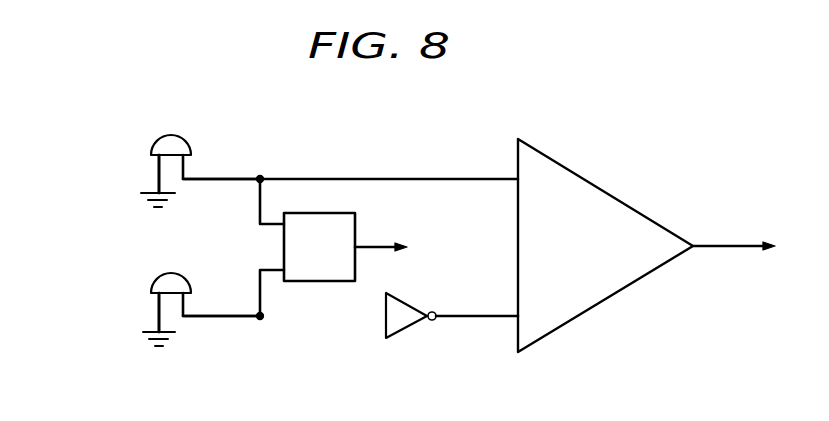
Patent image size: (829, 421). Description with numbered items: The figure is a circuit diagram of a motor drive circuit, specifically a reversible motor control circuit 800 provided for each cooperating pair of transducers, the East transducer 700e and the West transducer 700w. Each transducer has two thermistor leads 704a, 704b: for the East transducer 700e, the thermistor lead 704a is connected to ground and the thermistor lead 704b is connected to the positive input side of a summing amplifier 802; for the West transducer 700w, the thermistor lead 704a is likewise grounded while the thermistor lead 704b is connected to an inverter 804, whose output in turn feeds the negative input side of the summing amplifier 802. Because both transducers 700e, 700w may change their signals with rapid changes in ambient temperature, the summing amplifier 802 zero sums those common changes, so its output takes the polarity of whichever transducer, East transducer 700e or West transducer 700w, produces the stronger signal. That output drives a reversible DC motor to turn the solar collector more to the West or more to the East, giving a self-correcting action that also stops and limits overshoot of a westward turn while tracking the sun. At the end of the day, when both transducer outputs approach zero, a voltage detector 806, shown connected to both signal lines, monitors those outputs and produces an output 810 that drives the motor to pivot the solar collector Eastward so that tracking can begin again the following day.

The East transducer 700e is at (160, 145).
The West transducer 700w is at (160, 283).
The thermistor lead 704a is at (158, 178).
The thermistor lead 704b is at (218, 179).
The reversible motor control circuit 800 is at (646, 229).
The summing amplifier 802 is at (623, 215).
The inverter 804 is at (400, 322).
The voltage detector 806 is at (340, 260).
The output 810 is at (363, 249).